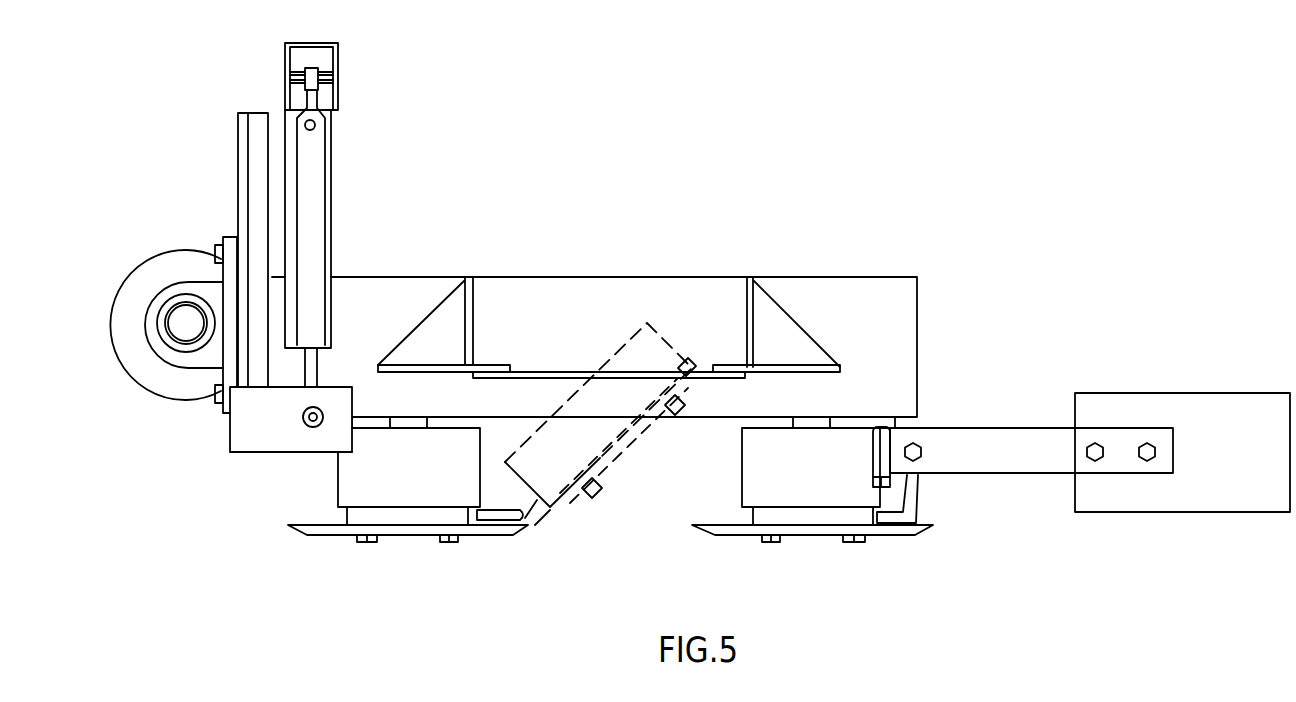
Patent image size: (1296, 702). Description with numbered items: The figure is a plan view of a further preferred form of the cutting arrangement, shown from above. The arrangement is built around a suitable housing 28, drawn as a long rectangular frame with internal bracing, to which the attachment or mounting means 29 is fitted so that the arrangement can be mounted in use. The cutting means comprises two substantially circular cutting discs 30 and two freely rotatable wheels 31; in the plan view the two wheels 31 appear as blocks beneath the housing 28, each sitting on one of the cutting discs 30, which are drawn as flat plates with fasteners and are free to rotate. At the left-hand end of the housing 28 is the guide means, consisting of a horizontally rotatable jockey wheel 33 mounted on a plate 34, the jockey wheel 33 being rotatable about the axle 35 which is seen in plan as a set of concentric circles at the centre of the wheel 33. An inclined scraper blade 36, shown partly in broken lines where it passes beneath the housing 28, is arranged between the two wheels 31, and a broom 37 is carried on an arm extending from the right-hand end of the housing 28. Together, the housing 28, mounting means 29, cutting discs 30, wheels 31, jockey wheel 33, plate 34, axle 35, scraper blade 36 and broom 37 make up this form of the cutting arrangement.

The housing 28 is at (843, 288).
The attachment or mounting means 29 is at (537, 377).
The cutting discs 30 is at (428, 532).
The freely rotatable wheels 31 is at (343, 480).
The jockey wheel 33 is at (178, 393).
The plate 34 is at (255, 157).
The axle 35 is at (190, 316).
The scraper blade 36 is at (608, 462).
The broom 37 is at (1218, 503).